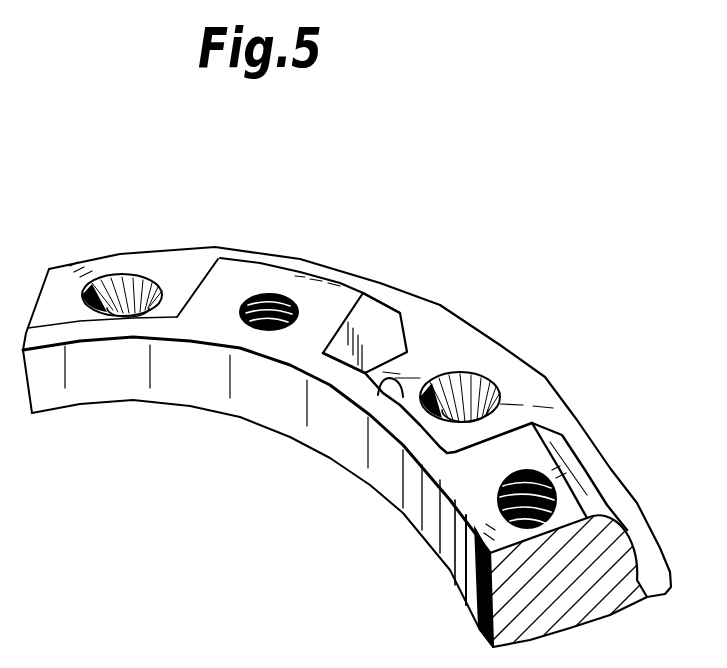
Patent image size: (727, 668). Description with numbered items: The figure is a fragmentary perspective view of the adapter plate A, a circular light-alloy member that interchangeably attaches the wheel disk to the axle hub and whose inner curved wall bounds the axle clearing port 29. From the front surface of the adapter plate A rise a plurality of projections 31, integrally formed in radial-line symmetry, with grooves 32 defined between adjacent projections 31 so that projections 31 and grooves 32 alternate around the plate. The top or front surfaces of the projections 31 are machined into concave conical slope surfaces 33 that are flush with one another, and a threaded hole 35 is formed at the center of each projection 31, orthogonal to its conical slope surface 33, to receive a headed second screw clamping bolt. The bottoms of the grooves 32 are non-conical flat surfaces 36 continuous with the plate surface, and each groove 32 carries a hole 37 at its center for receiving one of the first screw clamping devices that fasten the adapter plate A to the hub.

The axle clearing port 29 is at (160, 406).
The projections 31 is at (401, 311).
The grooves 32 is at (398, 401).
The concave conical slope surfaces 33 is at (243, 277).
The threaded holes 35 is at (285, 294).
The non-conical flat surfaces 36 is at (487, 359).
The holes 37 is at (116, 276).
The adapter plate A is at (215, 243).